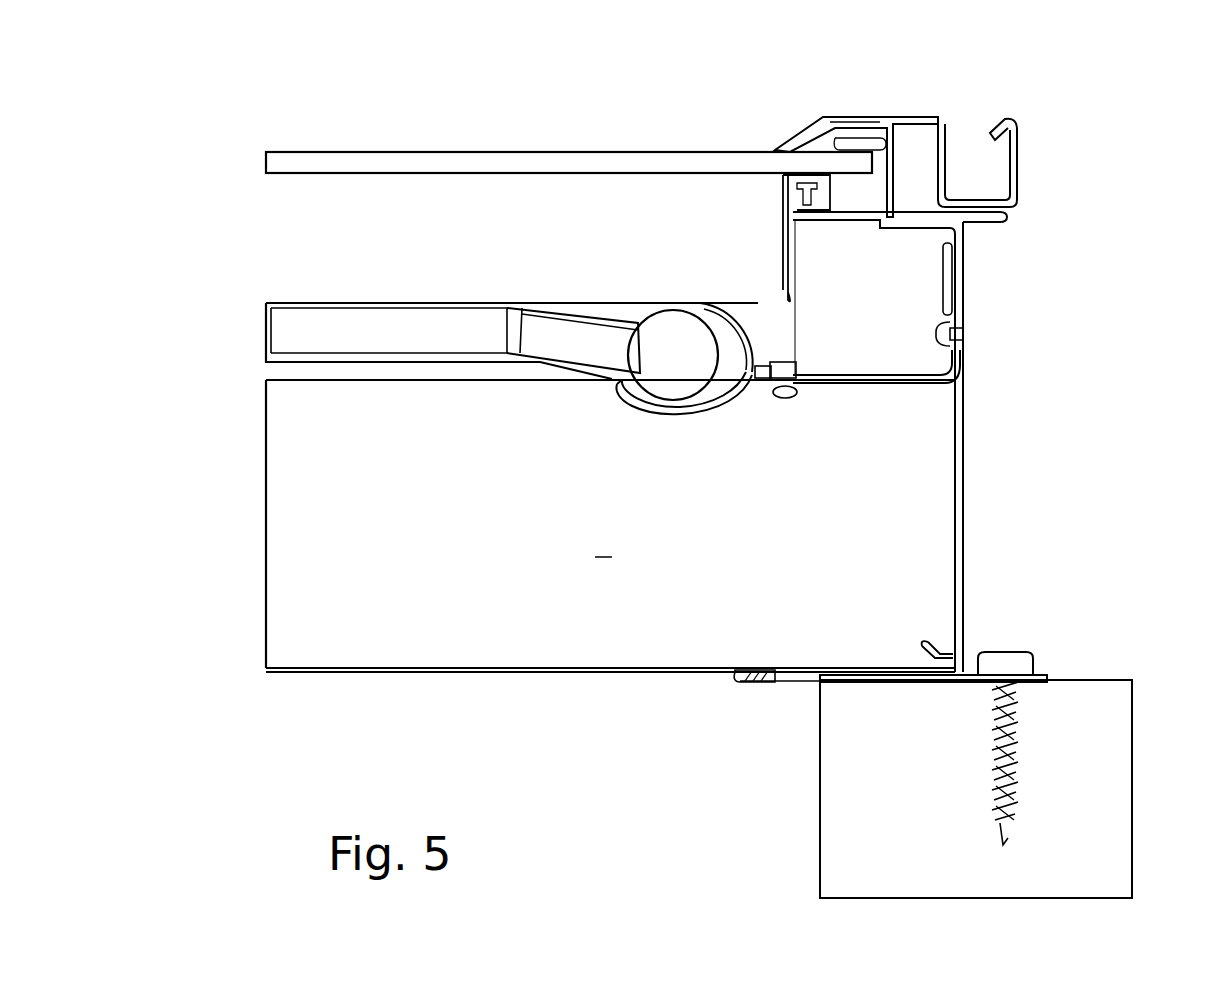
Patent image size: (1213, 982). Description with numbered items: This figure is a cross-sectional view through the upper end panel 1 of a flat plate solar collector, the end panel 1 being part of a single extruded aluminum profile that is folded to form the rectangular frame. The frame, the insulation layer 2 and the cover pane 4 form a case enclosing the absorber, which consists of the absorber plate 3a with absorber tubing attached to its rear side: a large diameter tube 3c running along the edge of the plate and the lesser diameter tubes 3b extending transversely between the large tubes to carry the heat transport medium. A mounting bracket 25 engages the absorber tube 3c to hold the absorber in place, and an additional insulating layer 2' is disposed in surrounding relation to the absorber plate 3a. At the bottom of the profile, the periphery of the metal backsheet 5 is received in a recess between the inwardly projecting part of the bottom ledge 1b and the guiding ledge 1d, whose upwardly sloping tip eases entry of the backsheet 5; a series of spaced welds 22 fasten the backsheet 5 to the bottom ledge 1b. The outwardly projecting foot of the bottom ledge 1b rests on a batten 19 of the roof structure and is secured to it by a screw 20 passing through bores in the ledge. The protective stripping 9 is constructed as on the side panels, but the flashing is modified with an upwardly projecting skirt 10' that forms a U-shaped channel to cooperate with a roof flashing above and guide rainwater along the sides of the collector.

The end panel 1 is at (963, 527).
The bottom ledge 1b is at (813, 680).
The guiding ledge 1d is at (940, 655).
The insulation layer 2 is at (610, 524).
The additional insulating layer 2' is at (878, 297).
The absorber plate 3a is at (587, 300).
The lesser diameter absorber tube 3b is at (400, 335).
The large diameter absorber tube 3c is at (655, 330).
The cover pane 4 is at (543, 168).
The backsheet 5 is at (478, 673).
The protective stripping 9 is at (890, 140).
The upwardly projecting skirt 10' is at (976, 125).
The batten 19 is at (1102, 713).
The screw 20 is at (1030, 655).
The weld 22 is at (767, 673).
The mounting bracket 25 is at (760, 378).